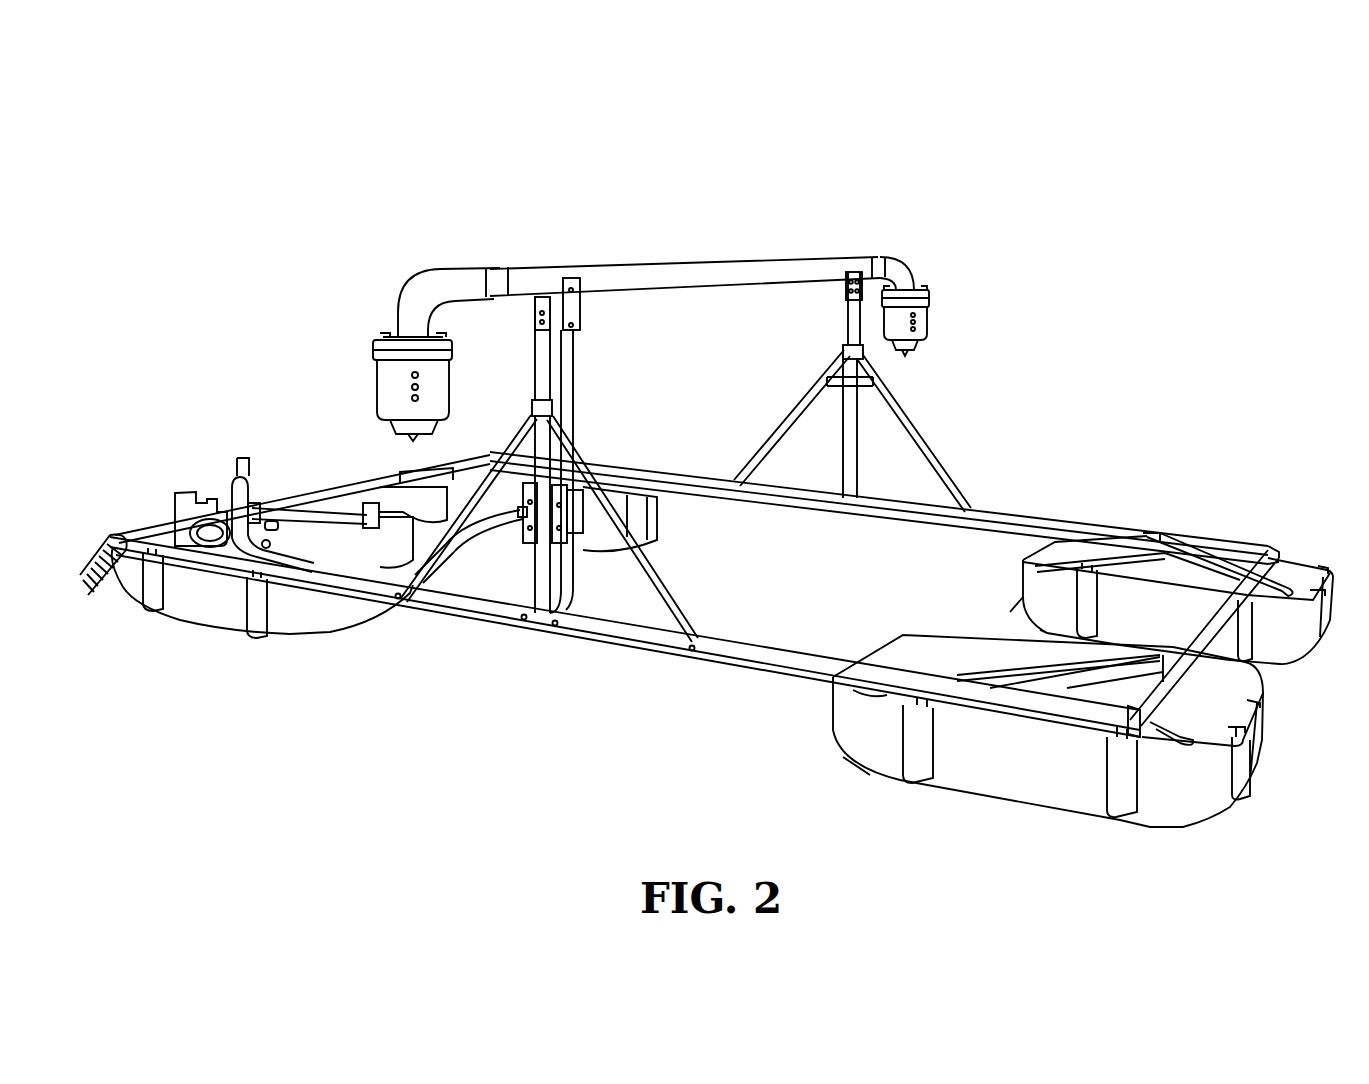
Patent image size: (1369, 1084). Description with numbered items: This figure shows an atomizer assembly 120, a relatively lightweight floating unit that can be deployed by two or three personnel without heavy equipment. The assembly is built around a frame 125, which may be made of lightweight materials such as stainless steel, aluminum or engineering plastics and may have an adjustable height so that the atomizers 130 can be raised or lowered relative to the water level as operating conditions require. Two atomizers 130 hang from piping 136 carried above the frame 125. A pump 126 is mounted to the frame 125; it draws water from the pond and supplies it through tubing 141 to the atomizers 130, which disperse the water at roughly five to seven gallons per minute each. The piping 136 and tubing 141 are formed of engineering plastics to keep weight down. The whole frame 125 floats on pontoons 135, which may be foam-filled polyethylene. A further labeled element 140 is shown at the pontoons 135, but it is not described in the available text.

The atomizer assembly 120 is at (229, 215).
The frame 125 is at (988, 503).
The pump 126 is at (174, 487).
The atomizer 130 is at (928, 287).
The pontoon 135 is at (232, 606).
The piping 136 is at (660, 255).
The float mounting support 140 is at (1012, 610).
The tubing 141 is at (578, 347).